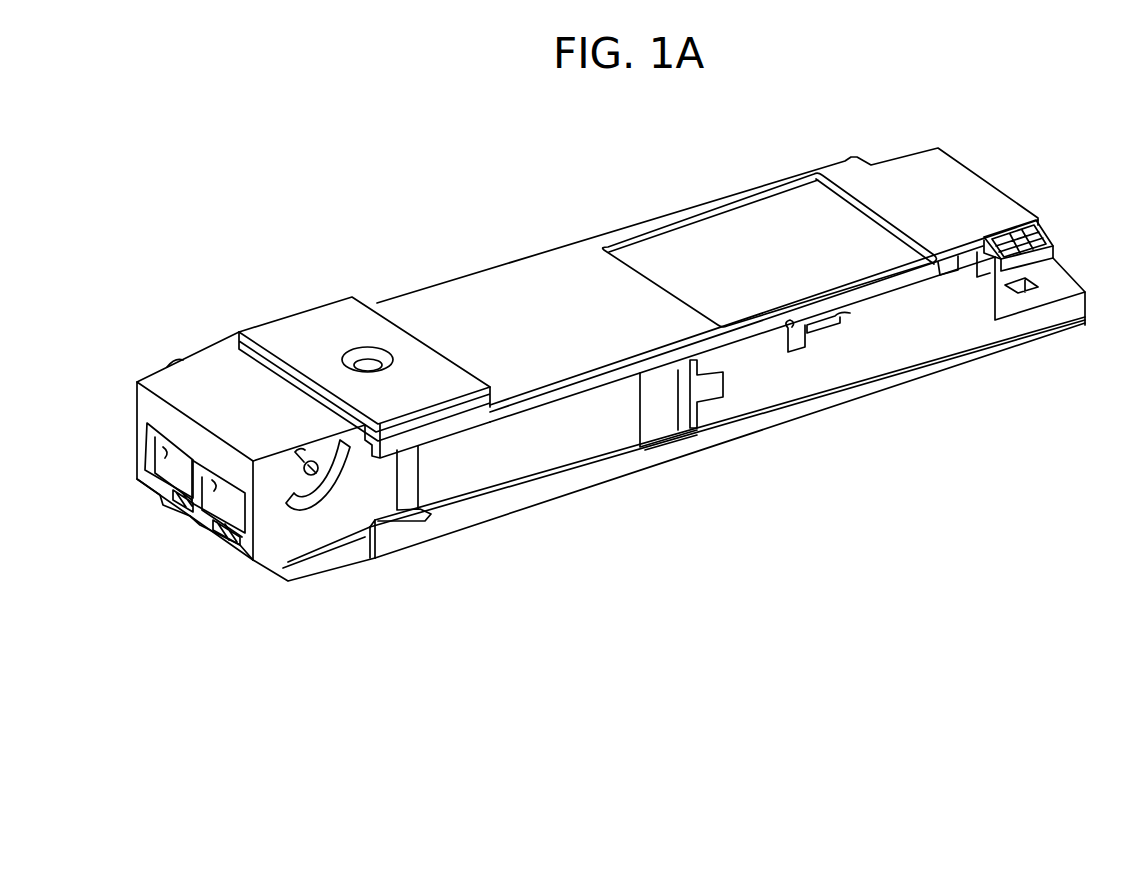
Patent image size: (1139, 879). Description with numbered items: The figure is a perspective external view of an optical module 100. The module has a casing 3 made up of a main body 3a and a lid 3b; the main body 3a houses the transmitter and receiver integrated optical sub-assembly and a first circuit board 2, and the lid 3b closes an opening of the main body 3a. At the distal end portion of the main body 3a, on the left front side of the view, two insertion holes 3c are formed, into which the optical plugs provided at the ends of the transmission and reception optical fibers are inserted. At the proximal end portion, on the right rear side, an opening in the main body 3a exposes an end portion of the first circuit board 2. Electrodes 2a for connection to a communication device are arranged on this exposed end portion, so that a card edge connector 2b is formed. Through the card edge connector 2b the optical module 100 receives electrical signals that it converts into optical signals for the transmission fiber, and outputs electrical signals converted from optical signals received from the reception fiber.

The optical module 100 is at (207, 222).
The casing 3 is at (211, 379).
The main body 3a is at (818, 378).
The lid 3b is at (556, 270).
The insertion holes 3c is at (180, 507).
The first circuit board 2 is at (1040, 270).
The electrodes 2a is at (1057, 240).
The card edge connector 2b is at (1055, 222).